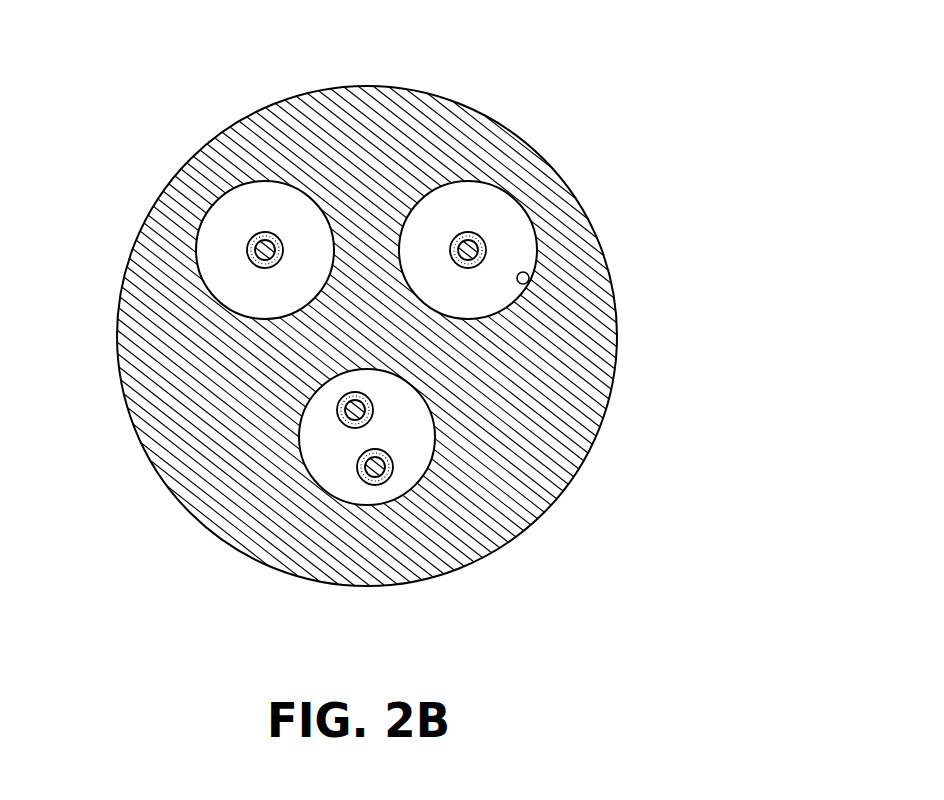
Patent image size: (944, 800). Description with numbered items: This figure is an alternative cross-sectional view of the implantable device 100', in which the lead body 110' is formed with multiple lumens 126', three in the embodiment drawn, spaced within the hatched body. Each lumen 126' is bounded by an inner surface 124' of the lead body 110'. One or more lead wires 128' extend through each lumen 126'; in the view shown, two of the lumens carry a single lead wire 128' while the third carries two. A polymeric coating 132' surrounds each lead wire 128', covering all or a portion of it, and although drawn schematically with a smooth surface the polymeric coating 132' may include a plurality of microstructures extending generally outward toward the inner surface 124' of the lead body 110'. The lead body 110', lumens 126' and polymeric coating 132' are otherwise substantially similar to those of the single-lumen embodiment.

The implantable device 100' is at (709, 64).
The lead body 110' is at (367, 304).
The inner surface 124' is at (616, 289).
The lumen 126' is at (354, 327).
The lead wire 128' is at (363, 418).
The polymeric coating 132' is at (359, 403).